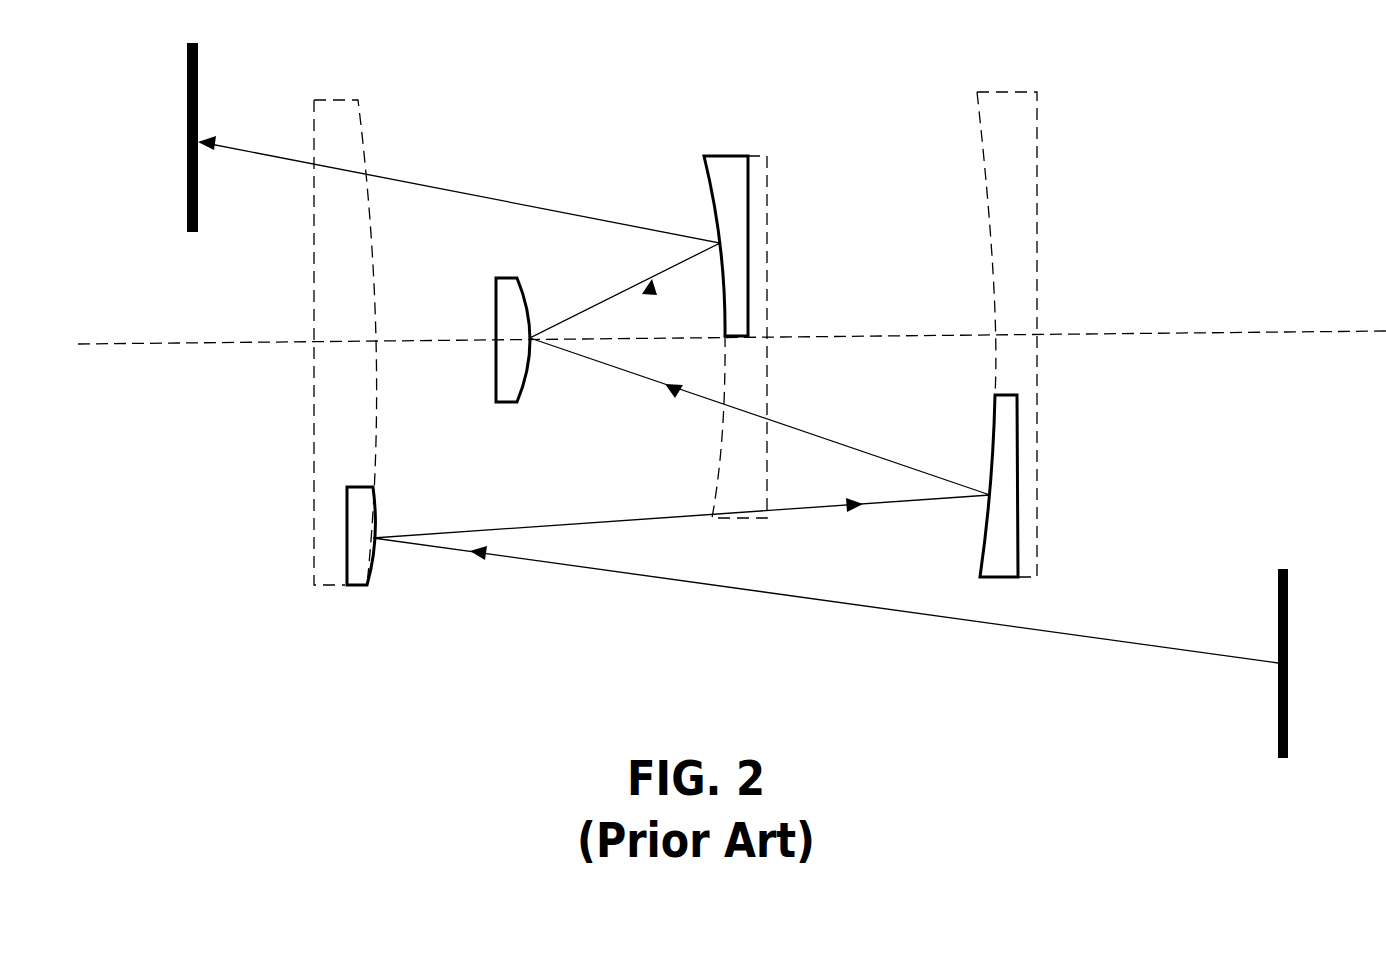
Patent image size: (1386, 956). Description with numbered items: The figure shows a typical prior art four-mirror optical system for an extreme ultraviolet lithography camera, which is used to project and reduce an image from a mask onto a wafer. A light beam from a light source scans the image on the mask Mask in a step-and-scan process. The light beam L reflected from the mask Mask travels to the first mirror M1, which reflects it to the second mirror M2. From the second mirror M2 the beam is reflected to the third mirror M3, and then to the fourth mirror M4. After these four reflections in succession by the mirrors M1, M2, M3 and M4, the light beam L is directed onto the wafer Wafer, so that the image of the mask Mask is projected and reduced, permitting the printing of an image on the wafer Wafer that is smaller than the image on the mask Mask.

The wafer Wafer is at (188, 212).
The mask Mask is at (1278, 757).
The first mirror M1 is at (370, 568).
The second mirror M2 is at (1018, 567).
The third mirror M3 is at (525, 388).
The fourth mirror M4 is at (740, 155).
The light beam L is at (1107, 640).